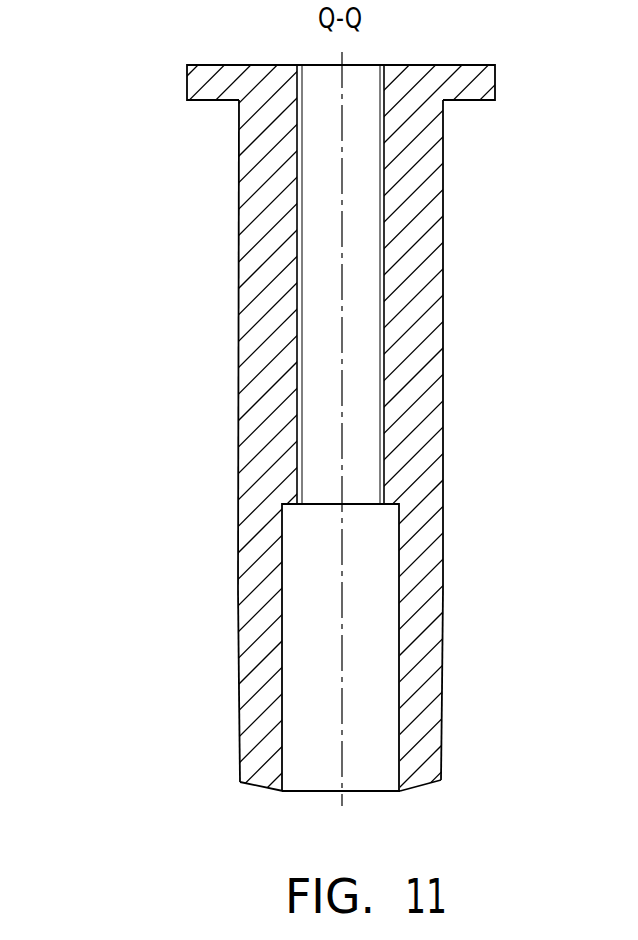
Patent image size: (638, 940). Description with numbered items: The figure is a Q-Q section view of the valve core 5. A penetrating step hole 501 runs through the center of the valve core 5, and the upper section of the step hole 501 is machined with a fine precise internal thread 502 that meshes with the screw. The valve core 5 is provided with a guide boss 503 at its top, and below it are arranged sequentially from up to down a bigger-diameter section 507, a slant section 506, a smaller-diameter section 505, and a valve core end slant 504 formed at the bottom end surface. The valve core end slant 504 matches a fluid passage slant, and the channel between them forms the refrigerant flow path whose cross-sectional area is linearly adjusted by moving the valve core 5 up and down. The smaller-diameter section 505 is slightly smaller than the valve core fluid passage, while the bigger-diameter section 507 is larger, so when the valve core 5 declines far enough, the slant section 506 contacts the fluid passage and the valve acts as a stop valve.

The valve core 5 is at (425, 511).
The step hole 501 is at (388, 660).
The fine precise internal thread 502 is at (297, 375).
The guide boss 503 is at (193, 82).
The valve core end slant 504 is at (437, 793).
The smaller-diameter section 505 is at (454, 713).
The slant section 506 is at (455, 605).
The bigger-diameter section 507 is at (455, 256).